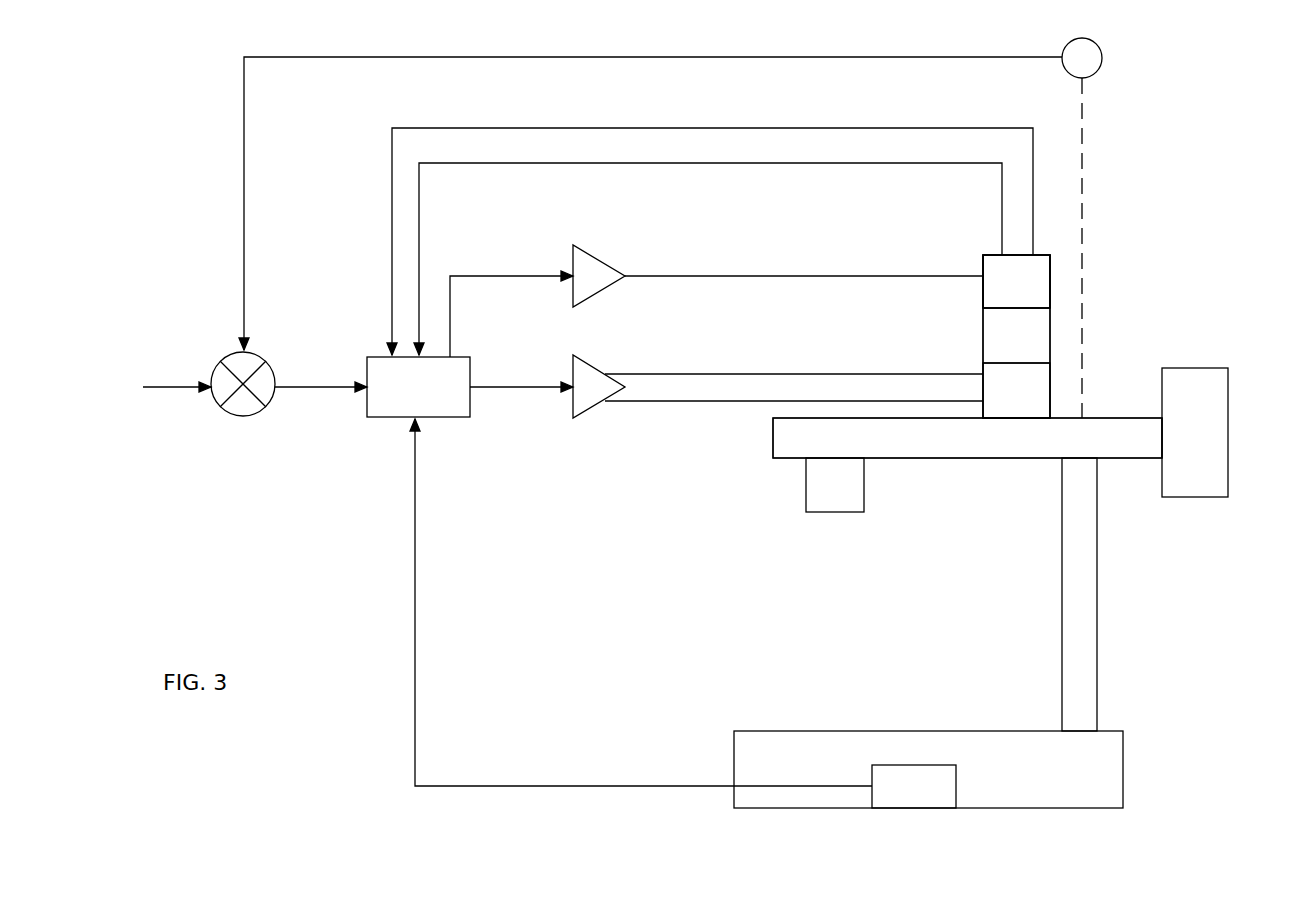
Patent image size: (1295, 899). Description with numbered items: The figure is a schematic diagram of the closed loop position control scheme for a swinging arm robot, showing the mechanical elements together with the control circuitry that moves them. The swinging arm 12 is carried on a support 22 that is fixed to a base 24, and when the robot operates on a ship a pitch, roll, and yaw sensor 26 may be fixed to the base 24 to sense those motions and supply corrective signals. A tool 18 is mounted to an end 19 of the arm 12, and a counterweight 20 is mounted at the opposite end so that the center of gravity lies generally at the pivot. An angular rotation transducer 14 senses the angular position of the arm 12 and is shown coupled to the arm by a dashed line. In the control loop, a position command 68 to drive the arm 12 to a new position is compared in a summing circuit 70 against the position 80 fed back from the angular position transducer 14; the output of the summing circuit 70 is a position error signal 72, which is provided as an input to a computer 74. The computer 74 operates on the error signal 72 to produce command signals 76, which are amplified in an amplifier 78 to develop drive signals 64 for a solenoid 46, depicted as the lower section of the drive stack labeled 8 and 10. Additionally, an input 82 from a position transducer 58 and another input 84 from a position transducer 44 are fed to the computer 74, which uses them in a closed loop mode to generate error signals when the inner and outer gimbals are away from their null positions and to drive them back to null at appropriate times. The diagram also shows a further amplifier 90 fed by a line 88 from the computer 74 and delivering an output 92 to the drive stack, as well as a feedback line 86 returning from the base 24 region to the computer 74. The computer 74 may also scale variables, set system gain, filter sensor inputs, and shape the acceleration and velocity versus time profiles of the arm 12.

The drive motor / actuator stack 8 is at (965, 249).
The drive unit 10 is at (971, 313).
The swinging arm 12 is at (972, 459).
The angular rotation transducer 14 is at (1100, 48).
The tool 18 is at (805, 487).
The end of swinging arm 19 is at (772, 438).
The counterweight 20 is at (1230, 394).
The support 22 is at (1097, 603).
The base 24 is at (1060, 800).
The pitch, roll, and yaw sensor 26 is at (957, 766).
The position transducer 44 is at (1050, 283).
The solenoid 46 is at (1026, 402).
The position transducer 58 is at (1085, 281).
The drive signals 64 is at (785, 401).
The position command 68 is at (157, 386).
The summing circuit 70 is at (238, 417).
The position error signal 72 is at (321, 375).
The computer 74 is at (385, 420).
The command signals 76 is at (540, 385).
The amplifier 78 is at (585, 414).
The position 80 is at (650, 190).
The input 82 is at (710, 228).
The input 84 is at (708, 246).
The position feedback line 86 is at (641, 602).
The control signal line 88 is at (521, 275).
The amplifier 90 is at (590, 252).
The amplifier output line 92 is at (765, 276).